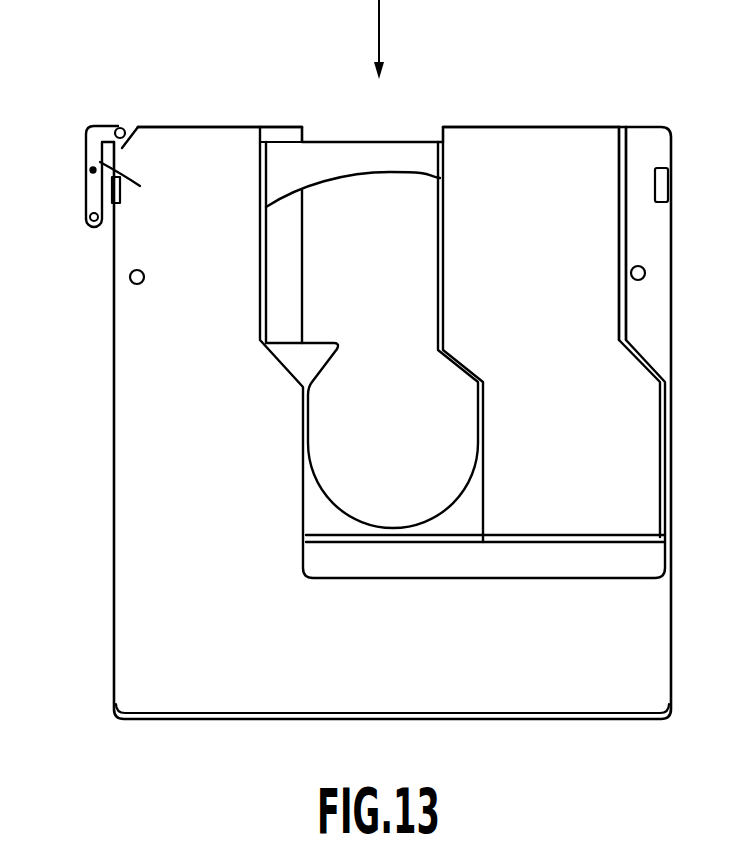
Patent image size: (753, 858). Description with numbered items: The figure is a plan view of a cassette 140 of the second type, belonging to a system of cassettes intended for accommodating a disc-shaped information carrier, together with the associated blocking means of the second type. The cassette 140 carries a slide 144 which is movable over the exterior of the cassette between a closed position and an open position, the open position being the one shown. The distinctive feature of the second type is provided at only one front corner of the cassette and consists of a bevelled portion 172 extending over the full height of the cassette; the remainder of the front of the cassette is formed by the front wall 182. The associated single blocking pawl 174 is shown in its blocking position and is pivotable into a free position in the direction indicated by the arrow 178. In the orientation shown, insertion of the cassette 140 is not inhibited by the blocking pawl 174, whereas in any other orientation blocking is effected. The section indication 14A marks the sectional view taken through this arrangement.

The cassette 140 is at (127, 592).
The slide 144 is at (506, 147).
The bevelled portion 172 is at (120, 152).
The blocking pawl 174 is at (96, 190).
The arrow 178 is at (100, 162).
The front wall 182 is at (223, 127).
The section line 14A is at (379, 30).